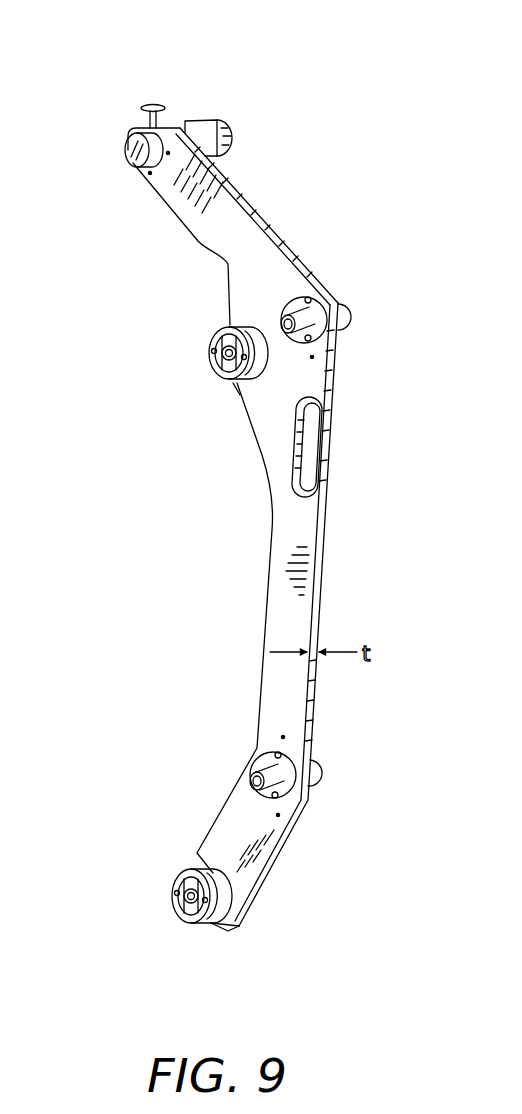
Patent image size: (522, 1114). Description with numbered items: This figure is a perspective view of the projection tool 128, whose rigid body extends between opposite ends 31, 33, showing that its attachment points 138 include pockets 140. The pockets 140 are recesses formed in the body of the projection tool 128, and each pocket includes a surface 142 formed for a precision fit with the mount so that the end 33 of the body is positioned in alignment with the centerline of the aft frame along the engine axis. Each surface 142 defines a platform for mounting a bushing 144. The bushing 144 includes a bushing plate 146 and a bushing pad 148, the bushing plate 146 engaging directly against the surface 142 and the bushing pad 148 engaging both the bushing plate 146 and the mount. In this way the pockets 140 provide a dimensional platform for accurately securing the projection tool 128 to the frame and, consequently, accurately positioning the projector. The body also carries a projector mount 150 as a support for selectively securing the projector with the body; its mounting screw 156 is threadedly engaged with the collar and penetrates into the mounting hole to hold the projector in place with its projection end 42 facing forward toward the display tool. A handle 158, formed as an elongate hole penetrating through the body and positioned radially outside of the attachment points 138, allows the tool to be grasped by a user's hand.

The projection tool 128 is at (319, 118).
The end 33 is at (207, 100).
The end 31 is at (257, 938).
The projection end 42 is at (126, 141).
The projector mount 150 is at (236, 157).
The mounting screw 156 is at (154, 104).
The bushing 144 is at (210, 348).
The bushing plate 146 is at (263, 372).
The bushing pad 148 is at (253, 330).
The attachment points 138 is at (188, 382).
The pockets 140 is at (243, 419).
The surface 142 is at (247, 387).
The handle 158 is at (311, 456).